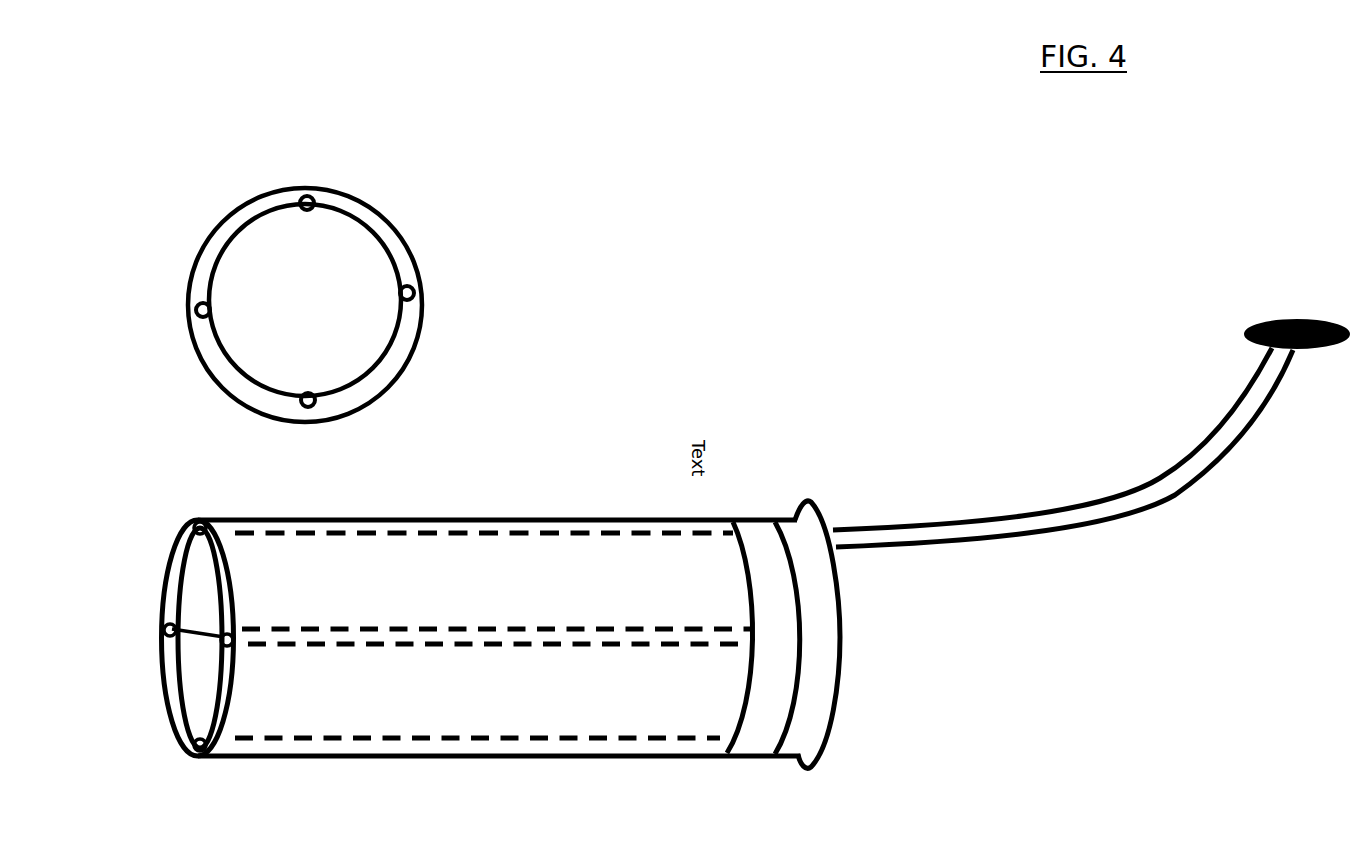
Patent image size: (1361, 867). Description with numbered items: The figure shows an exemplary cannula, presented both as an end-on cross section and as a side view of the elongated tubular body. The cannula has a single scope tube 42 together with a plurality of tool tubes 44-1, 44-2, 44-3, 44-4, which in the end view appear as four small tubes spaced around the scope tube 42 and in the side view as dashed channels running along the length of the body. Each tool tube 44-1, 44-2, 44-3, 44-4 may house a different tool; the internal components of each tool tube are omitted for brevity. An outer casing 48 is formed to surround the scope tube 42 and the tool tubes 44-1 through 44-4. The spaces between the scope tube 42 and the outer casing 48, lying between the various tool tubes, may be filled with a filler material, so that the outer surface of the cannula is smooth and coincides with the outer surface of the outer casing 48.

The scope tube 42 is at (395, 333).
The outer casing 48 is at (392, 382).
The tool tube 44-1 is at (194, 309).
The tool tube 44-2 is at (307, 400).
The tool tube 44-3 is at (307, 187).
The tool tube 44-4 is at (418, 294).